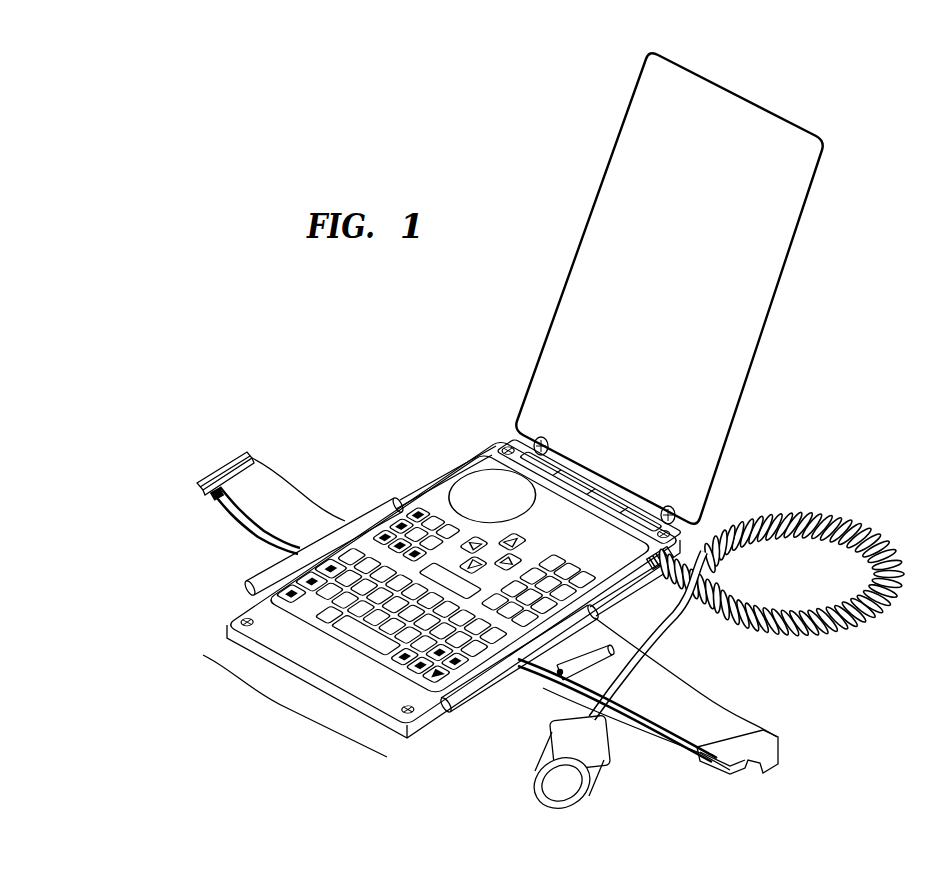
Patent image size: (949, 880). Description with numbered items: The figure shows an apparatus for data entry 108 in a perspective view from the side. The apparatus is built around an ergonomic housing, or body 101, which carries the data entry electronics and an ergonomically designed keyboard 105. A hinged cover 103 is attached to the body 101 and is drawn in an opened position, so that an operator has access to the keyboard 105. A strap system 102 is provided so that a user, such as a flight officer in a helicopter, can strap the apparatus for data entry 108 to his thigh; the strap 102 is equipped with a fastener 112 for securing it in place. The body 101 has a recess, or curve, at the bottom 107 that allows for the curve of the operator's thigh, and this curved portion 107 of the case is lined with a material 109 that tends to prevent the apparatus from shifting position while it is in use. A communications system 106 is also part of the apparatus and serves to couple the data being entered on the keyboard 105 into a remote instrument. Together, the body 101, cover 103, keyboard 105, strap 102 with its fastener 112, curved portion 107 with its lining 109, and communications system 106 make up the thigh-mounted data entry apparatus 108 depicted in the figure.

The body 101 is at (424, 718).
The strap system 102 is at (522, 681).
The cover 103 is at (737, 410).
The keyboard 105 is at (436, 489).
The communications system 106 is at (876, 511).
The curved portion 107 is at (295, 706).
The apparatus for data entry 108 is at (525, 421).
The material 109 is at (345, 712).
The fastener 112 is at (226, 458).